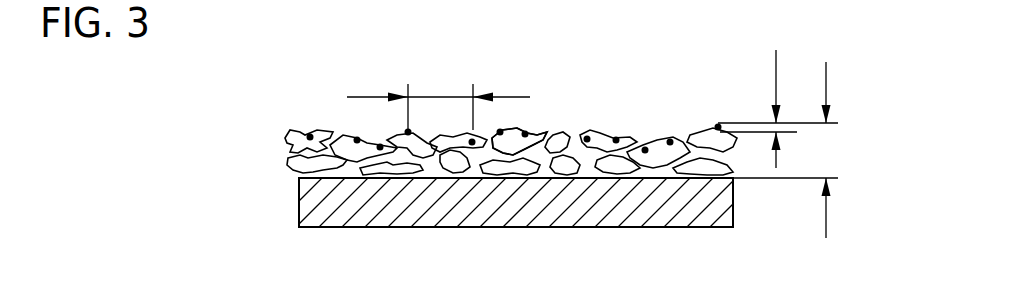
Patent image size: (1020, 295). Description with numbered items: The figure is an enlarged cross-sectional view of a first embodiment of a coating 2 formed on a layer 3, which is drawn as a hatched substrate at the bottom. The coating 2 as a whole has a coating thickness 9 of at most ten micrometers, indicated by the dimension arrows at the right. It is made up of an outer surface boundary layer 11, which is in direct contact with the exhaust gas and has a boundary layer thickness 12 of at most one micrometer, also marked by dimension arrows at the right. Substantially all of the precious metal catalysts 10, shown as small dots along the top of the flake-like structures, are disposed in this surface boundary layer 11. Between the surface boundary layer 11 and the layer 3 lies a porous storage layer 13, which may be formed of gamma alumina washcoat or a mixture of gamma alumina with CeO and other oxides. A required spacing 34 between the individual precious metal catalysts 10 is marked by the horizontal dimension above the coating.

The coating 2 is at (244, 151).
The layer 3 is at (708, 204).
The coating thickness 9 is at (826, 150).
The precious metal catalysts 10 is at (620, 130).
The surface boundary layer 11 is at (538, 116).
The boundary layer thickness 12 is at (776, 62).
The porous storage layer 13 is at (393, 186).
The spacing 34 is at (438, 96).